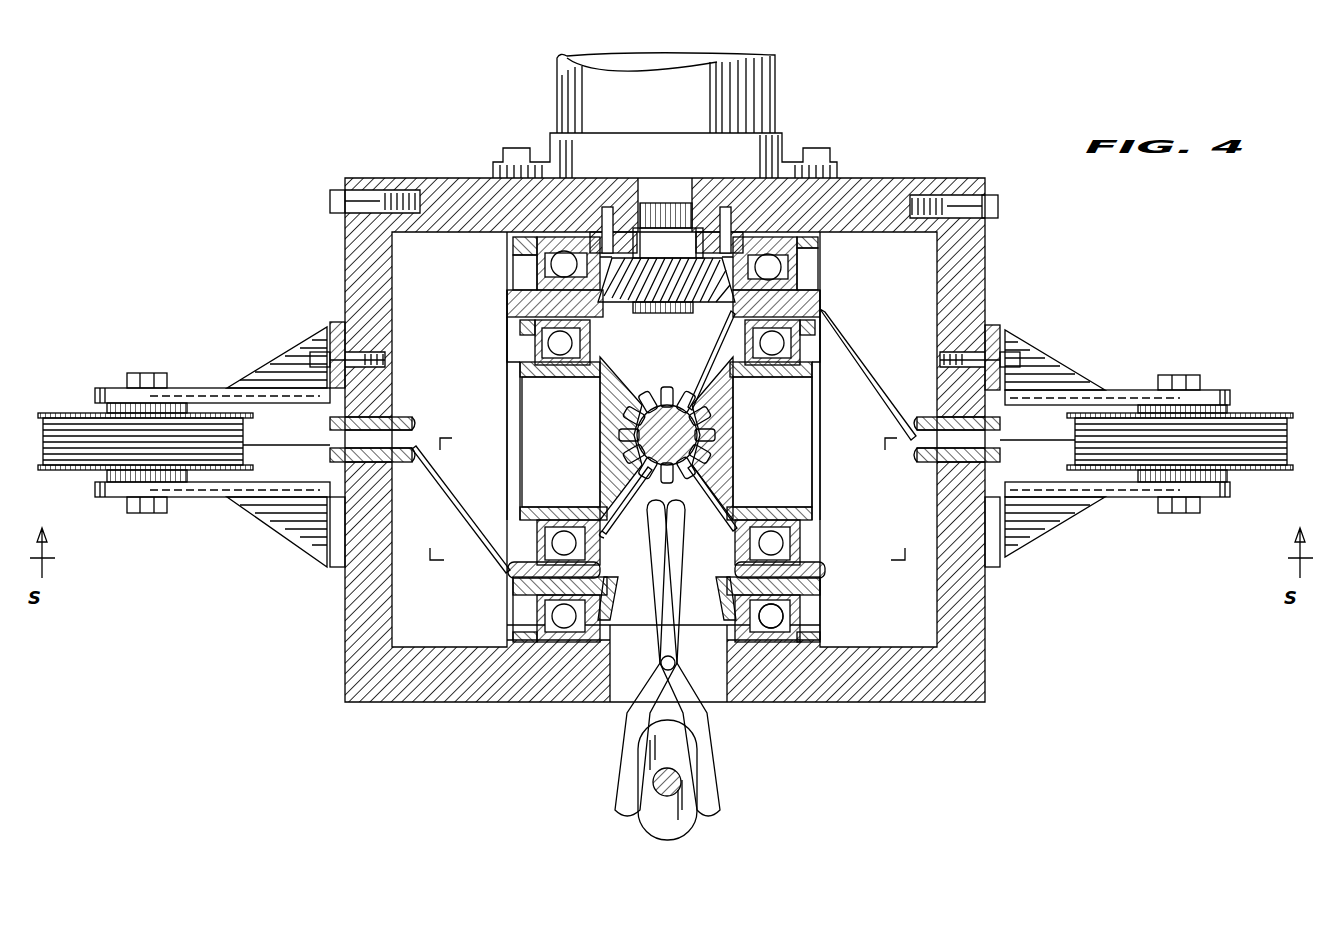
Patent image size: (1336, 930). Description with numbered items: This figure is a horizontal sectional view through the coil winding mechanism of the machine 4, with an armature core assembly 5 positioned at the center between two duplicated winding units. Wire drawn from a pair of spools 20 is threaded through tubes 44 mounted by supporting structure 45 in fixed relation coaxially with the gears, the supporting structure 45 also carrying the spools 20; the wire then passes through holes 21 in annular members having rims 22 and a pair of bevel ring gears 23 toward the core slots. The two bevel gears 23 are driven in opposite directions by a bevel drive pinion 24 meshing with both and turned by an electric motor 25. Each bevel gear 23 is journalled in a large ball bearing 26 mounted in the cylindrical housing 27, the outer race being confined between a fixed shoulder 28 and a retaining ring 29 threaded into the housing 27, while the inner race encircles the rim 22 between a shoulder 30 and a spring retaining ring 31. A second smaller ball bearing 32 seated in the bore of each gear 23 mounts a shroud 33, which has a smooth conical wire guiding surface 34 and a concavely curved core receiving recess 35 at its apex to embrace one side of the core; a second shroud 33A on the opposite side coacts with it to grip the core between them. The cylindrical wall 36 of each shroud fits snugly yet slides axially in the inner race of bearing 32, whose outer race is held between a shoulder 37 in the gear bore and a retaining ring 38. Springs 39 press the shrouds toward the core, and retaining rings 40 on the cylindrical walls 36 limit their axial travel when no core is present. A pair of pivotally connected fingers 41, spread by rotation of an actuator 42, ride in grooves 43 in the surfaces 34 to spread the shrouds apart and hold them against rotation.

The machine 4 is at (985, 172).
The armature core assembly 5 is at (712, 447).
The spools 20 is at (80, 413).
The holes 21 is at (823, 305).
The rims 22 is at (666, 295).
The bevel ring gears 23 is at (610, 590).
The bevel drive pinion 24 is at (666, 268).
The electric motor 25 is at (728, 88).
The large ball bearings 26 is at (528, 266).
The cylindrical housing 27 is at (450, 178).
The fixed shoulder 28 is at (580, 245).
The retaining ring 29 is at (513, 240).
The shoulder 30 is at (795, 613).
The spring retaining ring 31 is at (535, 600).
The second smaller ball bearing 32 is at (520, 537).
The shroud 33 is at (751, 480).
The drive member 33A is at (520, 396).
The wire guiding surface 34 is at (695, 360).
The core receiving recess 35 is at (618, 428).
The cylindrical wall 36 is at (667, 442).
The shoulder 37 is at (590, 335).
The retaining ring 38 is at (523, 329).
The springs 39 is at (606, 536).
The retaining rings 40 is at (520, 358).
The fingers 41 is at (628, 727).
The clevis 42 is at (675, 742).
The grooves 43 is at (669, 506).
The tubes 44 is at (402, 416).
The supporting structure 45 is at (958, 578).